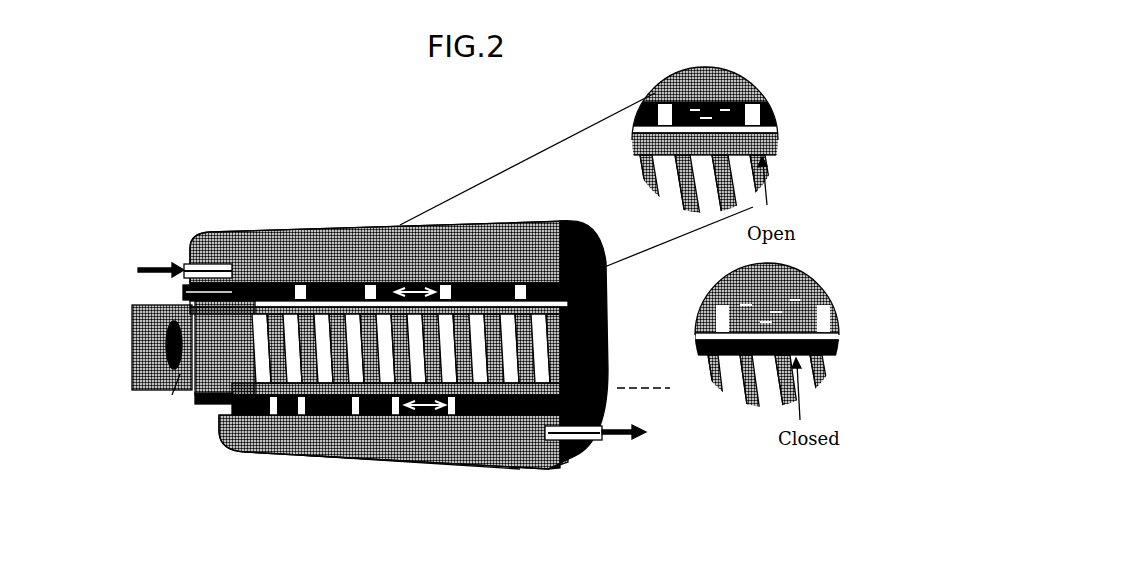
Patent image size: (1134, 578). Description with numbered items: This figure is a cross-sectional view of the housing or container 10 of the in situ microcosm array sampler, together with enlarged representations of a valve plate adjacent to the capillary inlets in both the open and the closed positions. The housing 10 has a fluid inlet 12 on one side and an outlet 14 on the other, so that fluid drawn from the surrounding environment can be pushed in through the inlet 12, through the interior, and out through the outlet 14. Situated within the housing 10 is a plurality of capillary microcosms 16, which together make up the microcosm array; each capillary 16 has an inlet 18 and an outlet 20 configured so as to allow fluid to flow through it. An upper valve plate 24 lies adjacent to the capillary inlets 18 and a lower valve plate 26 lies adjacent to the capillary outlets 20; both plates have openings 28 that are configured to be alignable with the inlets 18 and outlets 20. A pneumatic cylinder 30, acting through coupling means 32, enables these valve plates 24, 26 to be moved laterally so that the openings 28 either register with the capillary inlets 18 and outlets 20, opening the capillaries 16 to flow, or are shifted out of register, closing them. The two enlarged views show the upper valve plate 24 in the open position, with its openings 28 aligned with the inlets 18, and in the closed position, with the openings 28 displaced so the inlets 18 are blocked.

The housing 10 is at (367, 342).
The fluid inlet 12 is at (187, 262).
The outlet 14 is at (592, 452).
The capillary microcosms 16 is at (290, 460).
The capillary inlet 18 is at (405, 222).
The capillary outlet 20 is at (383, 466).
The upper valve plate 24 is at (482, 222).
The lower valve plate 26 is at (465, 465).
The openings 28 is at (256, 225).
The pneumatic cylinder 30 is at (145, 380).
The coupling means 32 is at (222, 400).